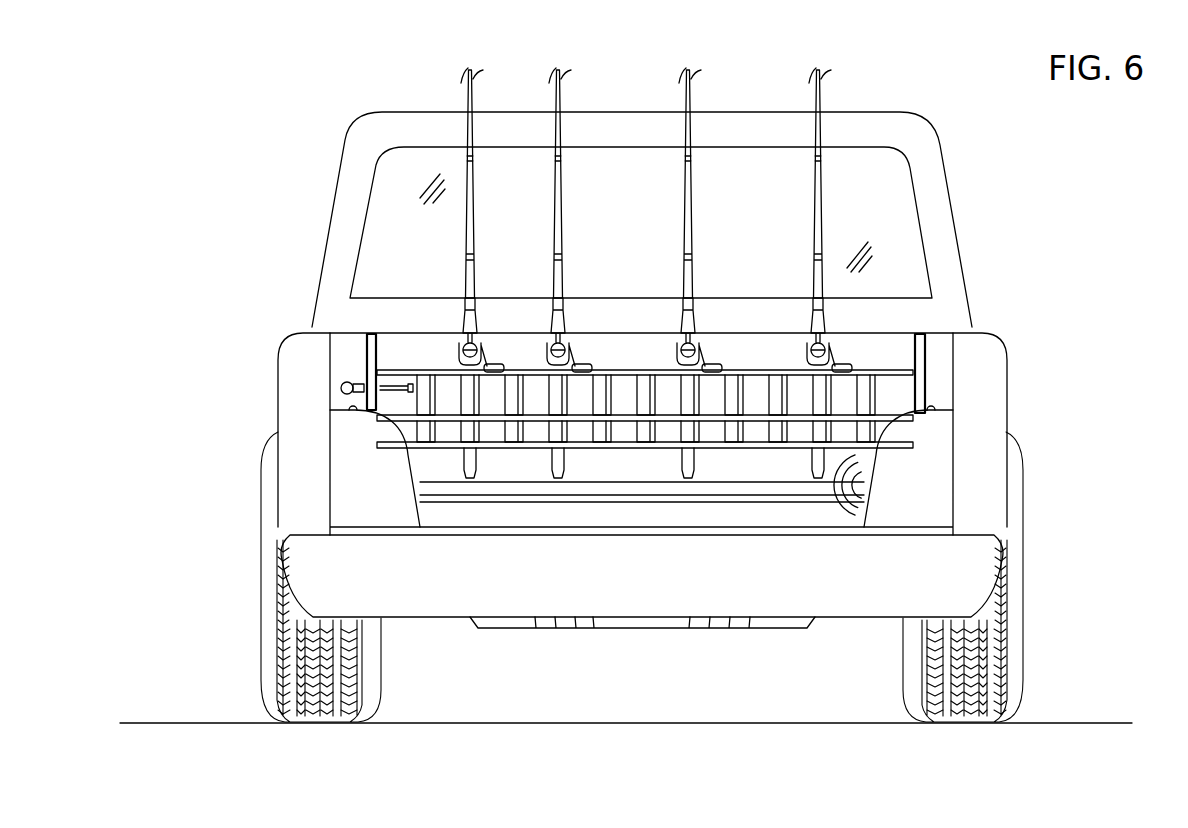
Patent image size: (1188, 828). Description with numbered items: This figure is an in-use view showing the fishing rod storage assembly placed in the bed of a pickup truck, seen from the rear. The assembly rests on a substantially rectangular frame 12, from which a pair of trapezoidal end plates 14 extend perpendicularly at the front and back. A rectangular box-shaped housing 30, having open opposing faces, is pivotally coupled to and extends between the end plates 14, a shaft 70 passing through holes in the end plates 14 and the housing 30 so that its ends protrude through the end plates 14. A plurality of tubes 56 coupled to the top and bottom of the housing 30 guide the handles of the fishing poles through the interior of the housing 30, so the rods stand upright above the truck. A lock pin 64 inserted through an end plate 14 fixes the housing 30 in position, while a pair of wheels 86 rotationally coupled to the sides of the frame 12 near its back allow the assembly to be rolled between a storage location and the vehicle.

The frame 12 is at (420, 488).
The end plate 14 is at (370, 333).
The housing 30 is at (880, 368).
The tube 56 is at (817, 388).
The lock pin 64 is at (350, 382).
The shaft 70 is at (887, 413).
The wheel 86 is at (857, 492).